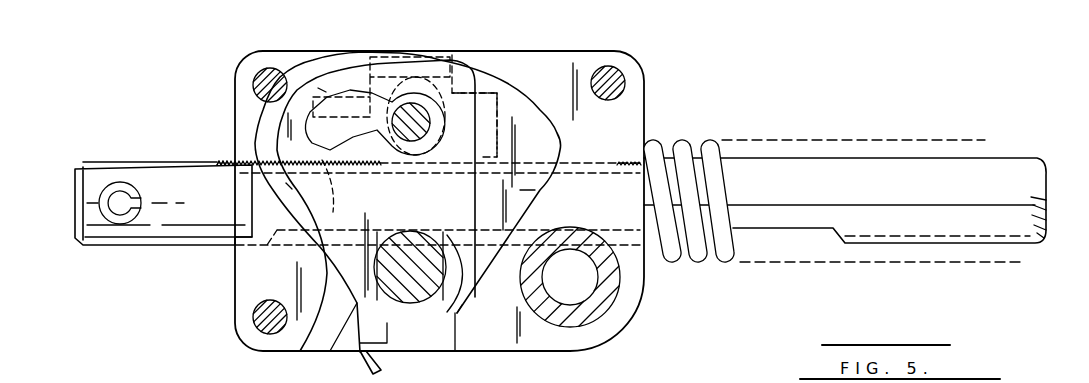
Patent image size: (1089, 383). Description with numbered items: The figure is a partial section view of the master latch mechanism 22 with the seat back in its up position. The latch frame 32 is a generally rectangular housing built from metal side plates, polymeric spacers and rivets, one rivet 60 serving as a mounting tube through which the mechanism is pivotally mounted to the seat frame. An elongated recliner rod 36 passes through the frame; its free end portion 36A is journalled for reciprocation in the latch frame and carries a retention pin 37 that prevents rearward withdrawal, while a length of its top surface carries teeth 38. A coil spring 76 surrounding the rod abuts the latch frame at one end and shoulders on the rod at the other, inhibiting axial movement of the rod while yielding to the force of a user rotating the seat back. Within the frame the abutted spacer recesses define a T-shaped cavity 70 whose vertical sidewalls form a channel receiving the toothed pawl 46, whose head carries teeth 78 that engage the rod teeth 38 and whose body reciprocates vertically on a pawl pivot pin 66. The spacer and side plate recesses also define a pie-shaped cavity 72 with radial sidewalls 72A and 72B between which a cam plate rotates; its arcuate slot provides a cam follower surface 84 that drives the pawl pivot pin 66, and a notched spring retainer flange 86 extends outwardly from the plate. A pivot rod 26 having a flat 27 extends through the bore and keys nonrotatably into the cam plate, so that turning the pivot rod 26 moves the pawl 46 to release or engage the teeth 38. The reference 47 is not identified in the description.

The master latch mechanism 22 is at (205, 343).
The pivot rod 26 is at (416, 292).
The flat 27 is at (469, 298).
The latch frame 32 is at (566, 50).
The recliner rod 36 is at (902, 165).
The free end portion of recliner rod 36A is at (159, 162).
The retention pin 37 is at (112, 183).
The teeth 38 is at (235, 162).
The toothed pawl 46 is at (487, 118).
The lever bar 47 is at (474, 58).
The rivet 60 is at (615, 305).
The pawl pivot pin 66 is at (412, 102).
The T-shaped cavity 70 is at (322, 88).
The pie-shaped cavity 72 is at (548, 134).
The radial sidewall 72A is at (525, 187).
The radial sidewall 72B is at (290, 182).
The coil spring 76 is at (712, 143).
The pawl teeth 78 is at (337, 192).
The cam follower surface 84 is at (370, 123).
The spring retainer flange 86 is at (364, 363).